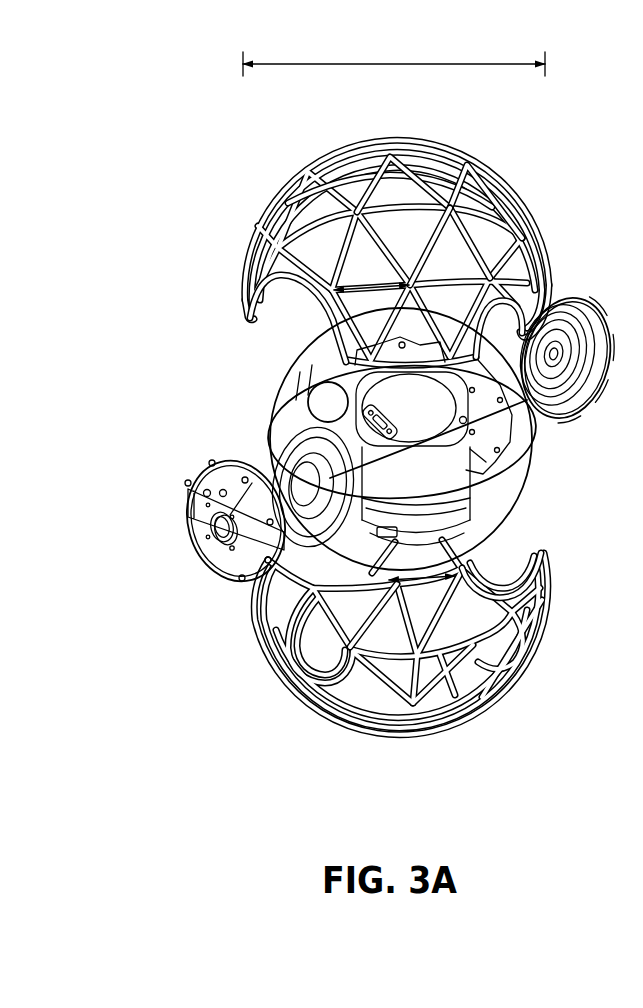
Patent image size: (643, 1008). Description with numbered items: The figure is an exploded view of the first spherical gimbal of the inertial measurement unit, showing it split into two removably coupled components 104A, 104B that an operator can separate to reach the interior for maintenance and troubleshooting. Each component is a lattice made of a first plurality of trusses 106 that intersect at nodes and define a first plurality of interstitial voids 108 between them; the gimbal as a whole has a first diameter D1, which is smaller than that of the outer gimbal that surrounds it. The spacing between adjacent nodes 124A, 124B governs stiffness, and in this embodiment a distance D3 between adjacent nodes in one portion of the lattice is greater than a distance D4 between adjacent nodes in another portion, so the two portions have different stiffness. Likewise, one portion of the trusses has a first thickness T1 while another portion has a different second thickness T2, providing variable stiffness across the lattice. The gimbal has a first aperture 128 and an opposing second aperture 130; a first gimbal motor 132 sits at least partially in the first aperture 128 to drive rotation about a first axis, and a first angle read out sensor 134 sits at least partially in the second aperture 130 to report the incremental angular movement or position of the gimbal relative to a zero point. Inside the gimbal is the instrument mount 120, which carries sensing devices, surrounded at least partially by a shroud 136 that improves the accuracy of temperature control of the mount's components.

The component of the first spherical gimbal 104A is at (377, 236).
The component of the first spherical gimbal 104B is at (371, 610).
The first plurality of trusses 106 is at (418, 148).
The first plurality of interstitial voids 108 is at (488, 238).
The node 124A is at (385, 140).
The node 124B is at (467, 164).
The instrument mount 120 is at (330, 401).
The first aperture 128 is at (291, 321).
The second aperture 130 is at (506, 550).
The first gimbal motor 132 is at (192, 522).
The first angle read out sensor 134 is at (578, 310).
The shroud 136 is at (528, 448).
The first diameter D1 is at (394, 56).
The distance between adjacent nodes in a first portion D3 is at (358, 285).
The distance between adjacent nodes in a second portion D4 is at (448, 581).
The first thickness T1 is at (459, 266).
The second thickness T2 is at (392, 634).